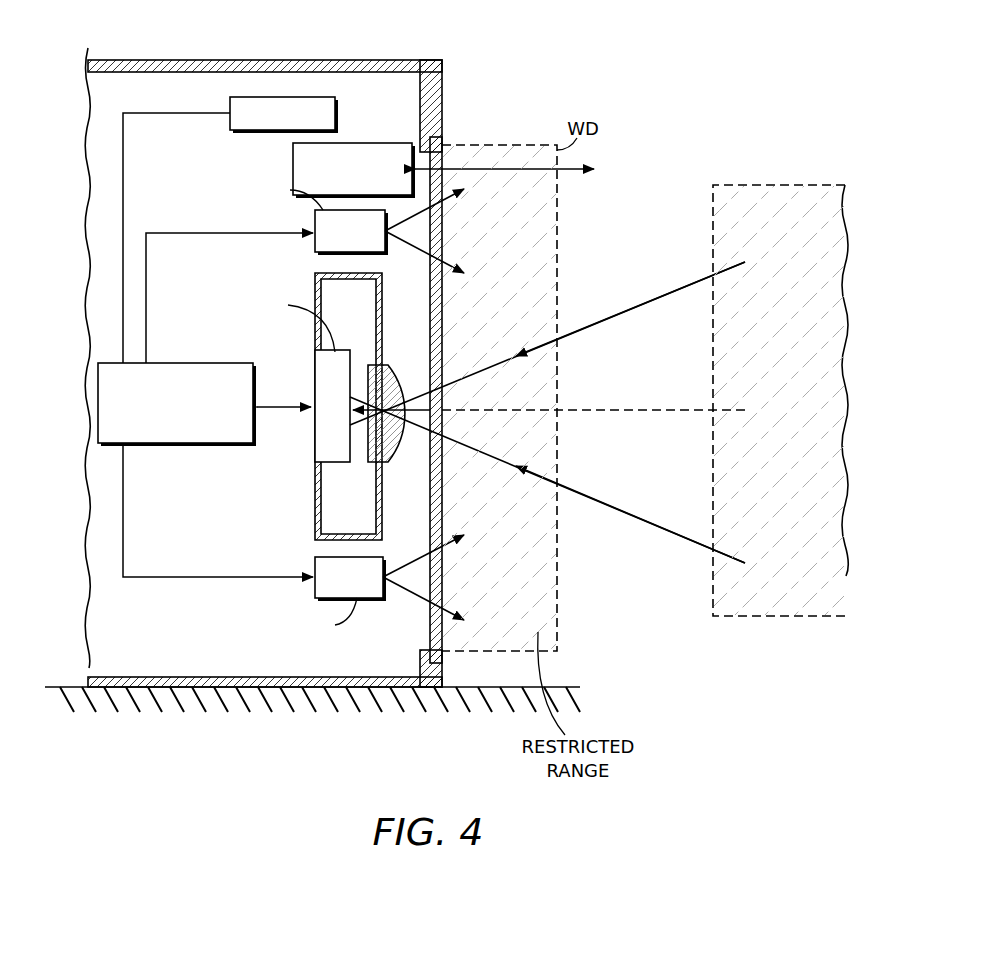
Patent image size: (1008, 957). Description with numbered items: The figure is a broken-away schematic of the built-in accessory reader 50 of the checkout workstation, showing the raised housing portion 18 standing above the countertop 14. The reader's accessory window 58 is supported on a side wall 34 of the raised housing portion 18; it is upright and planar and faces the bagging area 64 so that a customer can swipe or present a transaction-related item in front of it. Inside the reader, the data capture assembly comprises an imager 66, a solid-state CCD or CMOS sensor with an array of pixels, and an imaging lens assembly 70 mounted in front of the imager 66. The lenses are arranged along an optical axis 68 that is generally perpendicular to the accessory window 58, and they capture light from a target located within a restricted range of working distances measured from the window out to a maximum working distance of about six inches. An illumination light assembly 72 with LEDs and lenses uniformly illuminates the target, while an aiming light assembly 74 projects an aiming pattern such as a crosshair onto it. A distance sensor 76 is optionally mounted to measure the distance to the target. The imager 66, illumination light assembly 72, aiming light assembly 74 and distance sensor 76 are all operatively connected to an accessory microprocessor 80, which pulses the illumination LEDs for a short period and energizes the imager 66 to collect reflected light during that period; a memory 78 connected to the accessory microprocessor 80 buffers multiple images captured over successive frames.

The countertop 14 is at (78, 687).
The raised housing portion 18 is at (402, 60).
The side wall 34 is at (443, 91).
The accessory reader 50 is at (155, 90).
The accessory window 58 is at (384, 482).
The bagging area 64 is at (760, 610).
The imager 66 is at (315, 437).
The optical axis 68 is at (612, 410).
The imaging lens assembly 70 is at (393, 370).
The illumination light assembly 72 is at (330, 252).
The aiming light assembly 74 is at (323, 567).
The distance sensor 76 is at (386, 143).
The memory 78 is at (325, 97).
The accessory microprocessor 80 is at (212, 446).